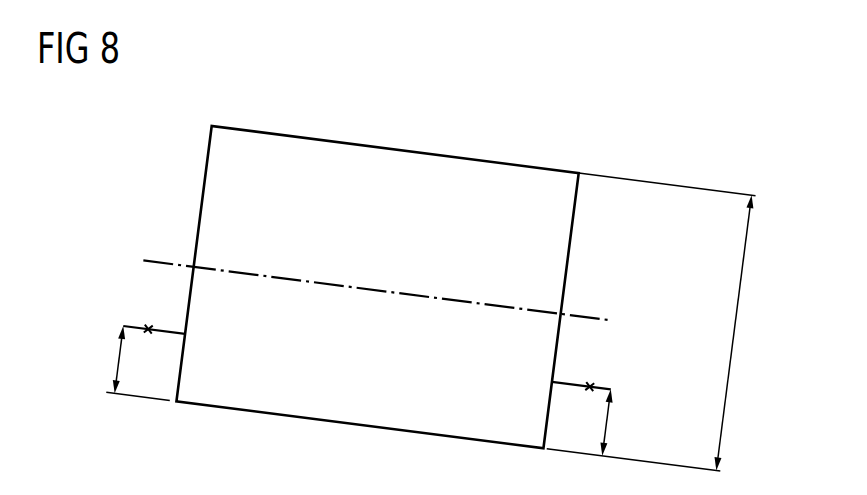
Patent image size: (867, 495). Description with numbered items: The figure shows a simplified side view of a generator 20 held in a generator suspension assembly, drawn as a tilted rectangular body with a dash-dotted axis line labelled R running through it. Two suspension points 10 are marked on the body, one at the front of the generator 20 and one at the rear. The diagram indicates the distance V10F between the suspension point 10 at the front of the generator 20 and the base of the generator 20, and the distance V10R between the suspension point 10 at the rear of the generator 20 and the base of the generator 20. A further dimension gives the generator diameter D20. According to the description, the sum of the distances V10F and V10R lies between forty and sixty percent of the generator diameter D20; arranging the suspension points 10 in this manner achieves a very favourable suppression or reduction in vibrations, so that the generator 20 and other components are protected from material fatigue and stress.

The generator 20 is at (398, 162).
The suspension point 10 is at (146, 322).
The rotation axis R is at (158, 259).
The generator diameter D20 is at (735, 333).
The distance between front suspension point and generator base V10F is at (120, 360).
The distance between rear suspension point and generator base V10R is at (611, 425).